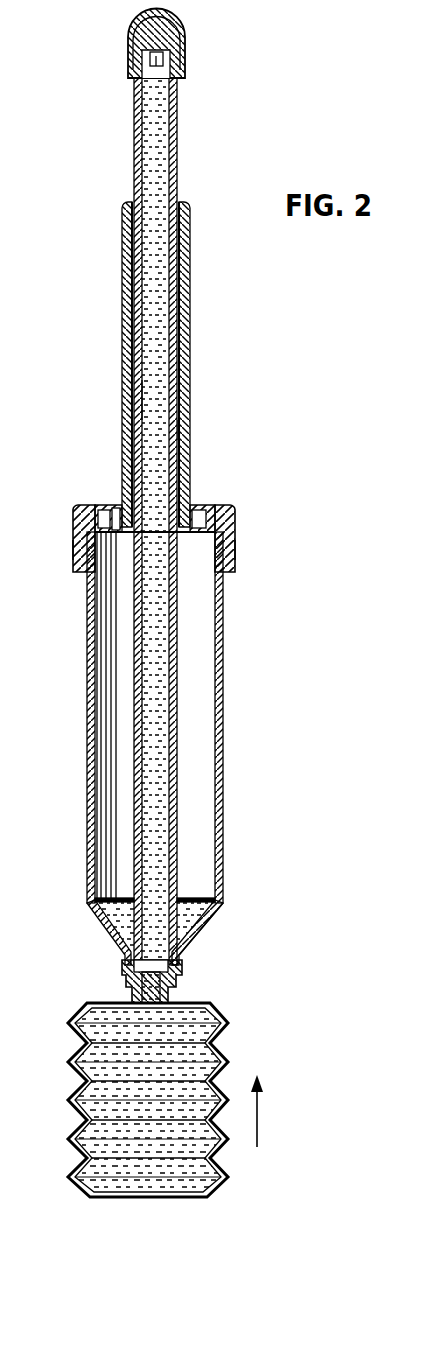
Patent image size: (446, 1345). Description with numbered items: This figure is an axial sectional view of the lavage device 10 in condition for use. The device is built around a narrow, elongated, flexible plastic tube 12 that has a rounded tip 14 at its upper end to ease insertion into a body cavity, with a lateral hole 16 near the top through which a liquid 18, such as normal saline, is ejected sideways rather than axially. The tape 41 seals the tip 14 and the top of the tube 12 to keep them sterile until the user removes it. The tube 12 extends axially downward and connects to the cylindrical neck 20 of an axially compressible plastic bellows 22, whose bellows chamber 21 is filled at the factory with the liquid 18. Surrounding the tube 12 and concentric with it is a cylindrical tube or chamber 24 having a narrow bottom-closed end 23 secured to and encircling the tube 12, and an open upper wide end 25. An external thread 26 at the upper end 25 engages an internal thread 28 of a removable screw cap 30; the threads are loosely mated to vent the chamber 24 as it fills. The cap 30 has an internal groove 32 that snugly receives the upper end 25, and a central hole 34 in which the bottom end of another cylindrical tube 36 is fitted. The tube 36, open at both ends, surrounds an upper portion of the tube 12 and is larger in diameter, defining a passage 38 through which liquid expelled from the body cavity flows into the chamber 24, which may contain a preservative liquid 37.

The lavage device 10 is at (200, 183).
The tube 12 is at (140, 162).
The rounded tip 14 is at (178, 33).
The lateral hole 16 is at (176, 63).
The liquid 18 is at (153, 400).
The cylindrical neck 20 is at (180, 977).
The bellows chamber 21 is at (259, 1128).
The bellows 22 is at (80, 1048).
The bottom-closed end 23 is at (205, 928).
The cylindrical tube or chamber 24 is at (88, 682).
The upper wide end 25 is at (215, 507).
The external thread 26 is at (82, 538).
The internal thread 28 is at (232, 548).
The screw cap 30 is at (222, 507).
The internal groove 32 is at (95, 505).
The central hole 34 is at (117, 505).
The cylindrical tube 36 is at (187, 350).
The liquid preservative 37 is at (110, 913).
The passage 38 is at (178, 430).
The tape 41 is at (132, 30).